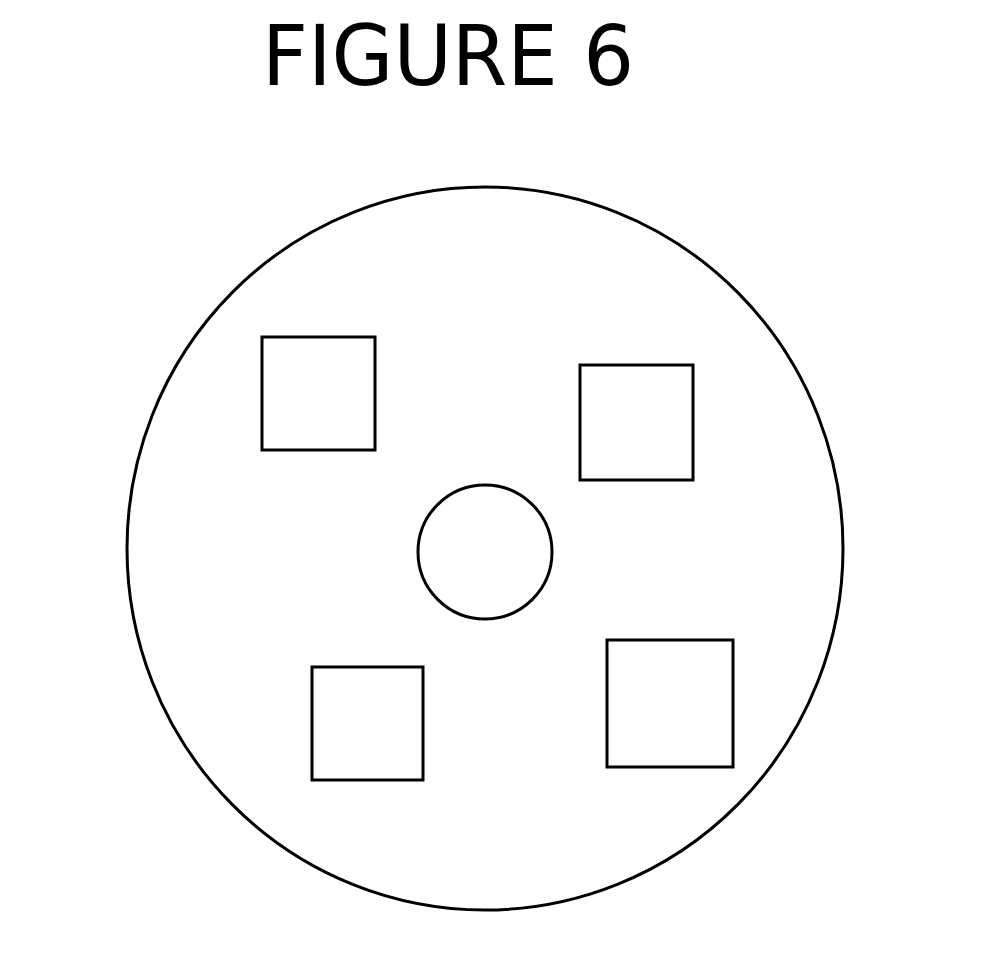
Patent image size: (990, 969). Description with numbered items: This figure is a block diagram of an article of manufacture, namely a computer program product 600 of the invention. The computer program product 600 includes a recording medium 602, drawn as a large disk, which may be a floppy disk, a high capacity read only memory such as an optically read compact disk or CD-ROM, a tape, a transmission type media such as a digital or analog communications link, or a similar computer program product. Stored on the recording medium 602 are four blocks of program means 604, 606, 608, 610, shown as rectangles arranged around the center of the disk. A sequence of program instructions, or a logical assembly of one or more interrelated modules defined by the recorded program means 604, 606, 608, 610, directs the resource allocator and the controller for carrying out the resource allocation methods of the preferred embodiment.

The computer program product 600 is at (504, 548).
The recording medium 602 is at (192, 343).
The program means 604 is at (636, 422).
The program means 606 is at (670, 703).
The program means 608 is at (367, 723).
The program means 610 is at (318, 393).